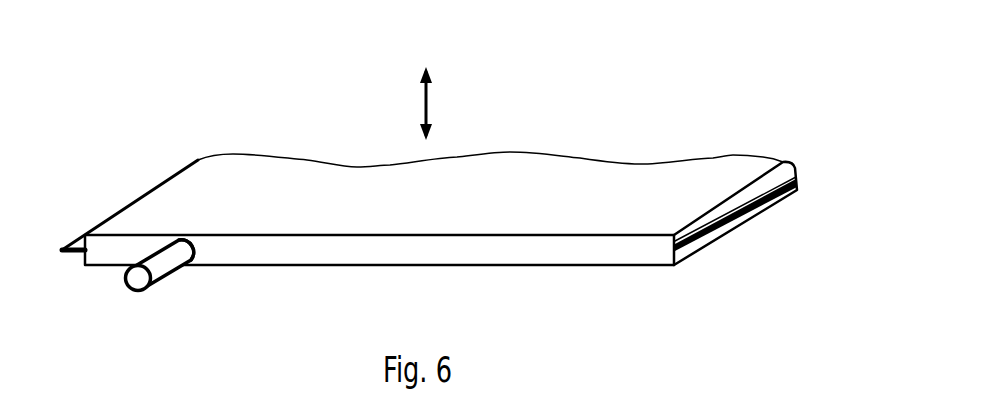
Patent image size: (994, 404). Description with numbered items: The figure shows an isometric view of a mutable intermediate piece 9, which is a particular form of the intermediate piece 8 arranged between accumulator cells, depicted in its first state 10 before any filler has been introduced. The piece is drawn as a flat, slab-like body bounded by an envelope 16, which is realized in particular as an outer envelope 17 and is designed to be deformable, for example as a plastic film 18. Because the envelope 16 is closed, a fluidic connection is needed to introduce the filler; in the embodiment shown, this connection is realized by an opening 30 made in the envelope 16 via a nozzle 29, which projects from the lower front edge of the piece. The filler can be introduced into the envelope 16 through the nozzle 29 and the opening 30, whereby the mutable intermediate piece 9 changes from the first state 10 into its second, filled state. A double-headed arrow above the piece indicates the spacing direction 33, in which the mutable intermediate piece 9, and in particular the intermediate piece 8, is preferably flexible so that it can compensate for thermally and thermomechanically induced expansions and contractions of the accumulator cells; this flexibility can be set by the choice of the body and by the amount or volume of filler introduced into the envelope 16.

The intermediate piece 8 is at (445, 132).
The mutable intermediate piece 9 is at (445, 132).
The first state 10 is at (445, 132).
The envelope 16 is at (490, 131).
The outer envelope 17 is at (490, 131).
The plastic film 18 is at (517, 170).
The nozzle 29 is at (166, 270).
The opening 30 is at (183, 245).
The spacing direction 33 is at (423, 103).